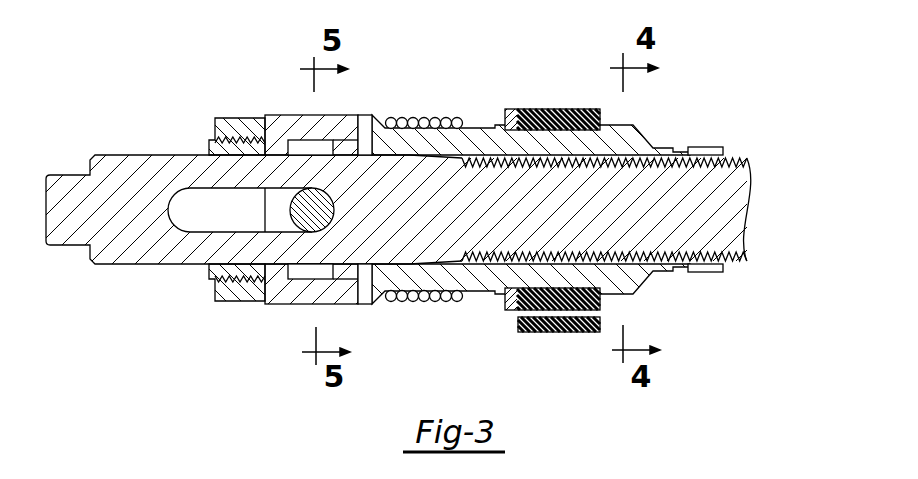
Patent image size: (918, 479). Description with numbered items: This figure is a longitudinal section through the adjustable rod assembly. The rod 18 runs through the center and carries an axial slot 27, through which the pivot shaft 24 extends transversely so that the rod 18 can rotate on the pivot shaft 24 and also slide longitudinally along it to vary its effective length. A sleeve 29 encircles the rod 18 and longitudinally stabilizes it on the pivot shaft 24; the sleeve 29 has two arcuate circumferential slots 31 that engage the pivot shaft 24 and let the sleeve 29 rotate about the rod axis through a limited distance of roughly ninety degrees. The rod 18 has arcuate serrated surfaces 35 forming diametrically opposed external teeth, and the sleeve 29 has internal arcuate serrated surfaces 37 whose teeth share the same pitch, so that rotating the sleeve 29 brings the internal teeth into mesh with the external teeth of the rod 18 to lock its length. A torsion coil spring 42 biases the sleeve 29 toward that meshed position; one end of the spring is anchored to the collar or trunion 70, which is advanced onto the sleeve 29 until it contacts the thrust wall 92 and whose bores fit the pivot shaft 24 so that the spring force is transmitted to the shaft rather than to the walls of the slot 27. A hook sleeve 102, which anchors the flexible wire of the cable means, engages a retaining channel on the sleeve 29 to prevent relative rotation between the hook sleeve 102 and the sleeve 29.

The rod 18 is at (732, 193).
The pivot shaft 24 is at (278, 216).
The axial slot 27 is at (193, 217).
The sleeve 29 is at (473, 283).
The arcuate circumferential slots 31 is at (280, 140).
The serrated arcuate surfaces 35 is at (728, 248).
The internal arcuate serrated surfaces 37 is at (688, 150).
The torsion coil spring 42 is at (417, 120).
The trunion 70 is at (297, 115).
The thrust wall 92 is at (362, 118).
The hook sleeve 102 is at (548, 115).